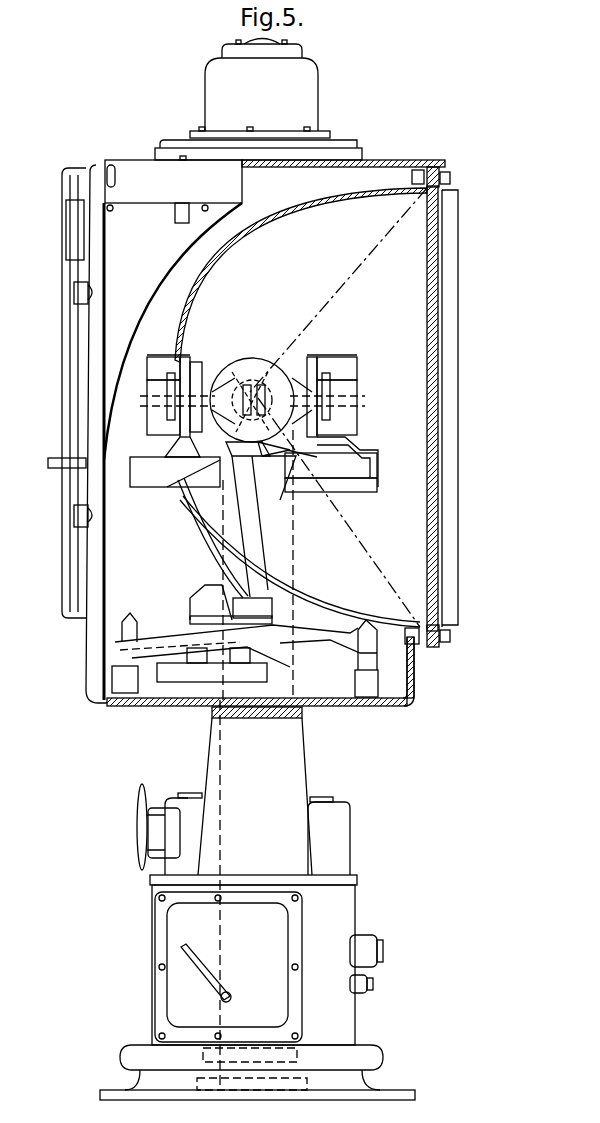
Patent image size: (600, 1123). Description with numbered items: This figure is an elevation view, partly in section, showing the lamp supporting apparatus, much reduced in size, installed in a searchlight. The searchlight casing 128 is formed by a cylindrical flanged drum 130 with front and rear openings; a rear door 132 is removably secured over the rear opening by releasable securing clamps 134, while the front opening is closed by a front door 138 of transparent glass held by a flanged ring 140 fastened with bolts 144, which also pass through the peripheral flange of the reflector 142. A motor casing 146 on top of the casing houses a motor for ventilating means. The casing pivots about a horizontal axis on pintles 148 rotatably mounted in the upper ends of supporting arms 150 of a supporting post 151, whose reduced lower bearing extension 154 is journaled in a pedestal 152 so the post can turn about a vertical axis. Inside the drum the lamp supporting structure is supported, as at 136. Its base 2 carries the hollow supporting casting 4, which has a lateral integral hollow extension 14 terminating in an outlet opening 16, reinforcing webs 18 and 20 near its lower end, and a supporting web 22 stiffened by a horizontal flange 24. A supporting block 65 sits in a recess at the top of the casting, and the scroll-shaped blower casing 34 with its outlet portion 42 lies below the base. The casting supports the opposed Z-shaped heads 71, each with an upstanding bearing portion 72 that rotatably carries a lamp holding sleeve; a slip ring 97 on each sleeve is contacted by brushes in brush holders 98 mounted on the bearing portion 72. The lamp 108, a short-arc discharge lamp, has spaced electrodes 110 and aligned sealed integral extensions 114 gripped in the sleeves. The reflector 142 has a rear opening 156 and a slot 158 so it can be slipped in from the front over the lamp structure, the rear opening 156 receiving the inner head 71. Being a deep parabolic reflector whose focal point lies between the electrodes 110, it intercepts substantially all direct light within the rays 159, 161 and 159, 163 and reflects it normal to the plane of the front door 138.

The base 2 is at (312, 647).
The hollow supporting casting 4 is at (246, 552).
The lateral integral hollow extension 14 is at (264, 502).
The outlet opening 16 is at (303, 450).
The reinforcing web 18 is at (262, 605).
The reinforcing web 20 is at (211, 584).
The supporting web 22 is at (348, 487).
The horizontal flange 24 is at (307, 488).
The blower casing 34 is at (266, 677).
The outlet portion 42 is at (258, 655).
The supporting block 65 is at (145, 482).
The head 71 is at (165, 350).
The upstanding bearing portion 72 is at (190, 363).
The slip ring 97 is at (150, 383).
The brush holder 98 is at (148, 360).
The lamp 108 is at (263, 357).
The electrodes 110 is at (252, 364).
The sealed integral extensions 114 is at (283, 382).
The searchlight casing 128 is at (48, 462).
The cylindrical flanged drum 130 is at (153, 699).
The rear door 132 is at (88, 270).
The releasable securing clamps 134 is at (72, 296).
The support 136 is at (117, 678).
The front door 138 is at (440, 510).
The flanged ring 140 is at (452, 600).
The reflector 142 is at (325, 606).
The bolts 144 is at (450, 178).
The motor casing 146 is at (315, 84).
The pintles 148 is at (230, 453).
The supporting arms 150 is at (210, 693).
The supporting post 151 is at (298, 762).
The pedestal 152 is at (348, 905).
The lower bearing extension 154 is at (218, 940).
The rear opening 156 is at (174, 350).
The slot 158 is at (202, 533).
The ray 159 is at (346, 291).
The ray 161 is at (193, 362).
The ray 163 is at (190, 512).